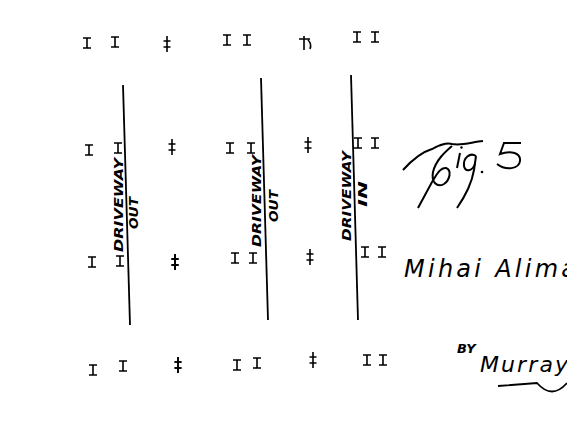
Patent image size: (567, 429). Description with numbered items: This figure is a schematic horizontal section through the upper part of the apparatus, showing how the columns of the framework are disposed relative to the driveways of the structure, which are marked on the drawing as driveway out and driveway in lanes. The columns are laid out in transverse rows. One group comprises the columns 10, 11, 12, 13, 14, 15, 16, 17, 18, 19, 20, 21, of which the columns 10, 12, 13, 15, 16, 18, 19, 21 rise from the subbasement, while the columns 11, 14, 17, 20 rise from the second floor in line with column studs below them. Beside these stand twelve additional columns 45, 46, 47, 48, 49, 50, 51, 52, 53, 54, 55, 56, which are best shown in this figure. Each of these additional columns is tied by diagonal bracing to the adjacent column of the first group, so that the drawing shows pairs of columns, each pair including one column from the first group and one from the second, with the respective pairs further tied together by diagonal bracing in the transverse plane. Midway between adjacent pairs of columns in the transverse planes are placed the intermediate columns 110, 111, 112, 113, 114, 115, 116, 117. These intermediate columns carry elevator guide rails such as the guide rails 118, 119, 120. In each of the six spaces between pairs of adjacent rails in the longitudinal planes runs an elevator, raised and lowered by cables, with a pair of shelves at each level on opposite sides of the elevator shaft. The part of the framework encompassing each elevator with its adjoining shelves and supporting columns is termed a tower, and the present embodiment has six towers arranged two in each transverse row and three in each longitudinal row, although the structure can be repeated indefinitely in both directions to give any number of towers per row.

The column 10 is at (88, 370).
The column 11 is at (230, 365).
The column 12 is at (378, 364).
The column 13 is at (85, 260).
The column 14 is at (230, 258).
The column 15 is at (386, 251).
The column 16 is at (85, 148).
The column 17 is at (225, 147).
The column 18 is at (380, 141).
The column 19 is at (83, 43).
The column 20 is at (222, 40).
The column 21 is at (380, 36).
The column 45 is at (118, 372).
The column 46 is at (252, 366).
The column 47 is at (360, 361).
The column 48 is at (116, 265).
The column 49 is at (250, 262).
The column 50 is at (368, 250).
The column 51 is at (114, 147).
The column 52 is at (248, 146).
The column 53 is at (360, 142).
The column 54 is at (112, 41).
The column 55 is at (253, 40).
The column 56 is at (352, 37).
The column 110 is at (174, 368).
The column 111 is at (308, 362).
The column 112 is at (172, 263).
The column 113 is at (305, 259).
The column 114 is at (165, 146).
The column 115 is at (305, 144).
The column 116 is at (163, 42).
The column 117 is at (313, 54).
The elevator guide rail 118 is at (174, 362).
The elevator guide rail 119 is at (178, 266).
The elevator guide rail 120 is at (176, 256).